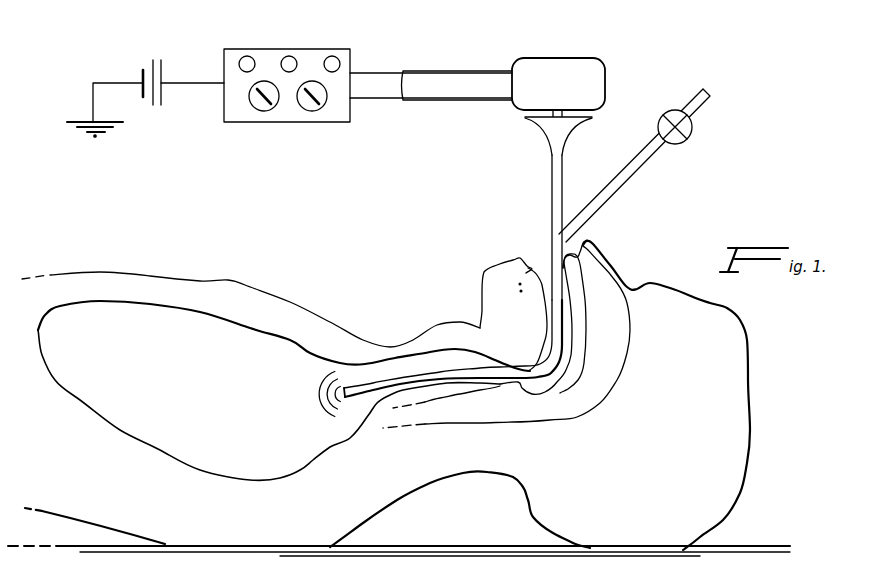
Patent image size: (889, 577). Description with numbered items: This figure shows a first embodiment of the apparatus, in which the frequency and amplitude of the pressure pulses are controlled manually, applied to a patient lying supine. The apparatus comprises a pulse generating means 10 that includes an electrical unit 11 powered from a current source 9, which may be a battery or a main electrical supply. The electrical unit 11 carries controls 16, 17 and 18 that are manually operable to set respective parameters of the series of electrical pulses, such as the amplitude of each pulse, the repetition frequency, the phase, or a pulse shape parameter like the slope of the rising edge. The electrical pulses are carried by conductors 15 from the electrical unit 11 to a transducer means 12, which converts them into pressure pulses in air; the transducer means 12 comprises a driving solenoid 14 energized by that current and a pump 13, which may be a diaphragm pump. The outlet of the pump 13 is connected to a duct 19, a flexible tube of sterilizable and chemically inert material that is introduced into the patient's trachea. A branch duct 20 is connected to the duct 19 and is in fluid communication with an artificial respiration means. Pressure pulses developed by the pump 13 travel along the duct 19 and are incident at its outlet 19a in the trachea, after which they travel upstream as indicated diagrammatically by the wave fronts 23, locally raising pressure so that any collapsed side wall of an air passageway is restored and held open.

The current source 9 is at (150, 70).
The pulse generating means 10 is at (427, 50).
The electrical unit 11 is at (237, 118).
The transducer means 12 is at (630, 88).
The pump 13 is at (555, 136).
The driving solenoid 14 is at (563, 70).
The conductors 15 is at (403, 73).
The control 16 is at (248, 56).
The control 17 is at (289, 56).
The control 18 is at (328, 56).
The duct 19 is at (552, 221).
The outlet 19a is at (338, 387).
The branch duct 20 is at (633, 172).
The wave fronts 23 is at (315, 401).